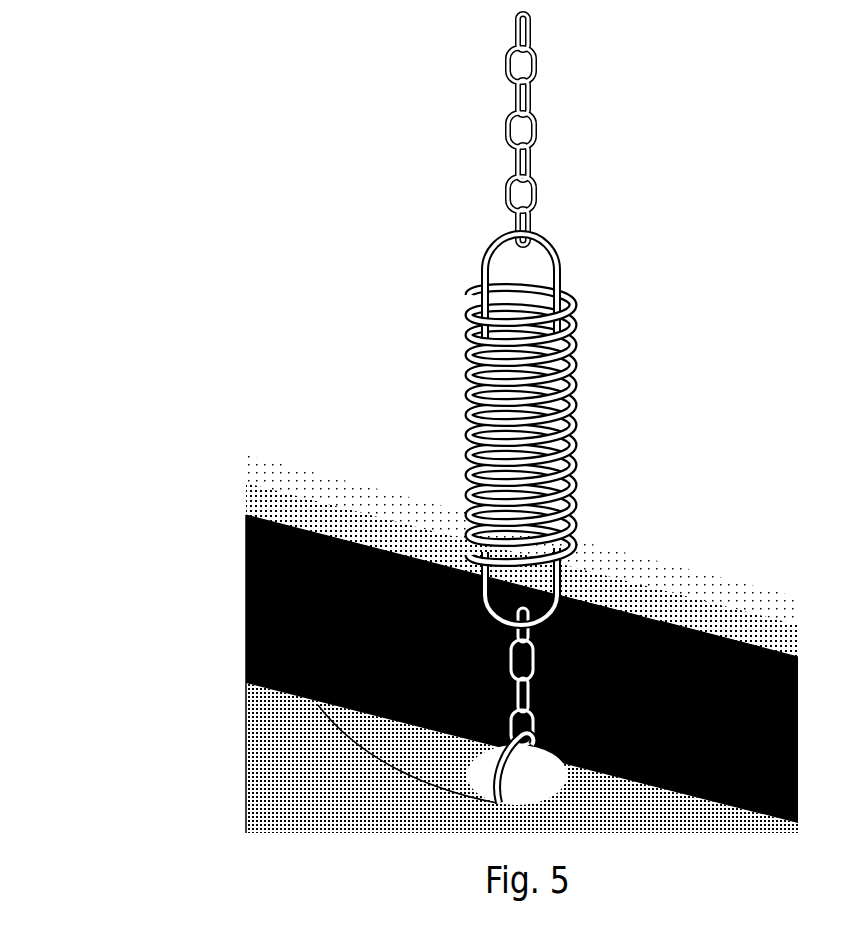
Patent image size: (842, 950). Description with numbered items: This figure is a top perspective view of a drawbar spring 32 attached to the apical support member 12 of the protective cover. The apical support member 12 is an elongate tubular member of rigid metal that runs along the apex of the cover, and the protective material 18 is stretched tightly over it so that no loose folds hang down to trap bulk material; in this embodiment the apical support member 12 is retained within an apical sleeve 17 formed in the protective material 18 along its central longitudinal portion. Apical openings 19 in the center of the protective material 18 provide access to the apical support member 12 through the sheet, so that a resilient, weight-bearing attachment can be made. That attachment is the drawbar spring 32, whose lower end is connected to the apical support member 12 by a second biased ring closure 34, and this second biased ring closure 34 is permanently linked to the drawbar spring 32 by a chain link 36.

The apical support member 12 is at (247, 528).
The apical sleeve 17 is at (450, 568).
The protective material 18 is at (697, 632).
The apical openings 19 is at (590, 605).
The drawbar spring 32 is at (470, 492).
The second biased ring closure 34 is at (247, 595).
The chain link 36 is at (505, 202).